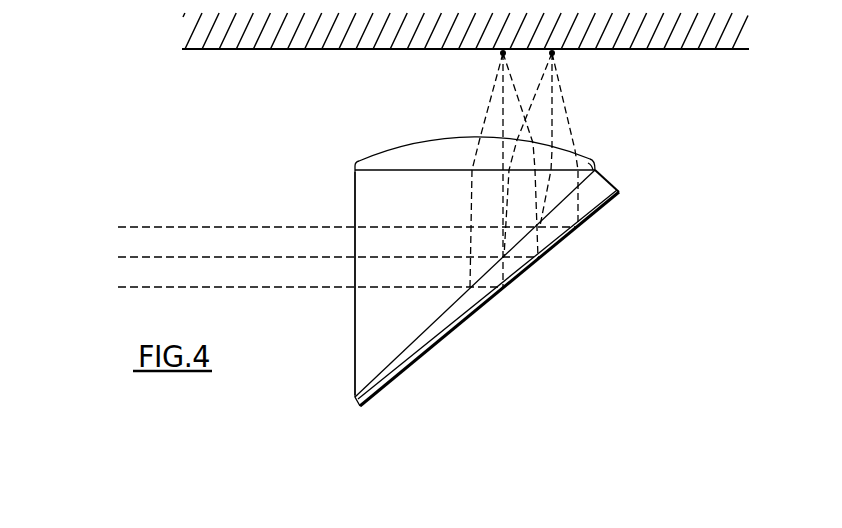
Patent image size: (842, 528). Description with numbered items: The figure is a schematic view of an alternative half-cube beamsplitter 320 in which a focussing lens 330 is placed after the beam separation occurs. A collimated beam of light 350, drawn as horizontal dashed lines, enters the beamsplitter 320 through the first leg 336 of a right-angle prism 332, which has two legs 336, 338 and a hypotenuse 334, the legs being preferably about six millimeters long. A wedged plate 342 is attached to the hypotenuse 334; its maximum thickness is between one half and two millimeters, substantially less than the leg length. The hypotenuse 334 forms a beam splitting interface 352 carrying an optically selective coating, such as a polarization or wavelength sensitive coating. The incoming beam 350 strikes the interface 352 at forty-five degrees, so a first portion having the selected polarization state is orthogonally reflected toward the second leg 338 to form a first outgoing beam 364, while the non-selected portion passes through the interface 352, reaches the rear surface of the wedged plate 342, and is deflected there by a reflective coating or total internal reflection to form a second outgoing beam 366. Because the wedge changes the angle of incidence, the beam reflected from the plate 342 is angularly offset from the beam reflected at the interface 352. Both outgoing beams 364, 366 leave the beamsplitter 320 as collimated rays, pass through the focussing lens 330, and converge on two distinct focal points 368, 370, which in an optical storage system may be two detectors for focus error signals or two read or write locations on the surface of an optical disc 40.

The optical disc 40 is at (687, 50).
The half-cube beamsplitter 320 is at (550, 312).
The focussing lens 330 is at (381, 158).
The right-angle prism 332 is at (346, 188).
The hypotenuse 334 is at (398, 358).
The first leg 336 is at (354, 380).
The second leg 338 is at (450, 172).
The wedged plate 342 is at (598, 189).
The collimated beam of light 350 is at (197, 227).
The beam splitting interface 352 is at (594, 172).
The first outgoing beam 364 is at (514, 94).
The second outgoing beam 366 is at (566, 109).
The first focal point 368 is at (500, 57).
The second focal point 370 is at (555, 57).